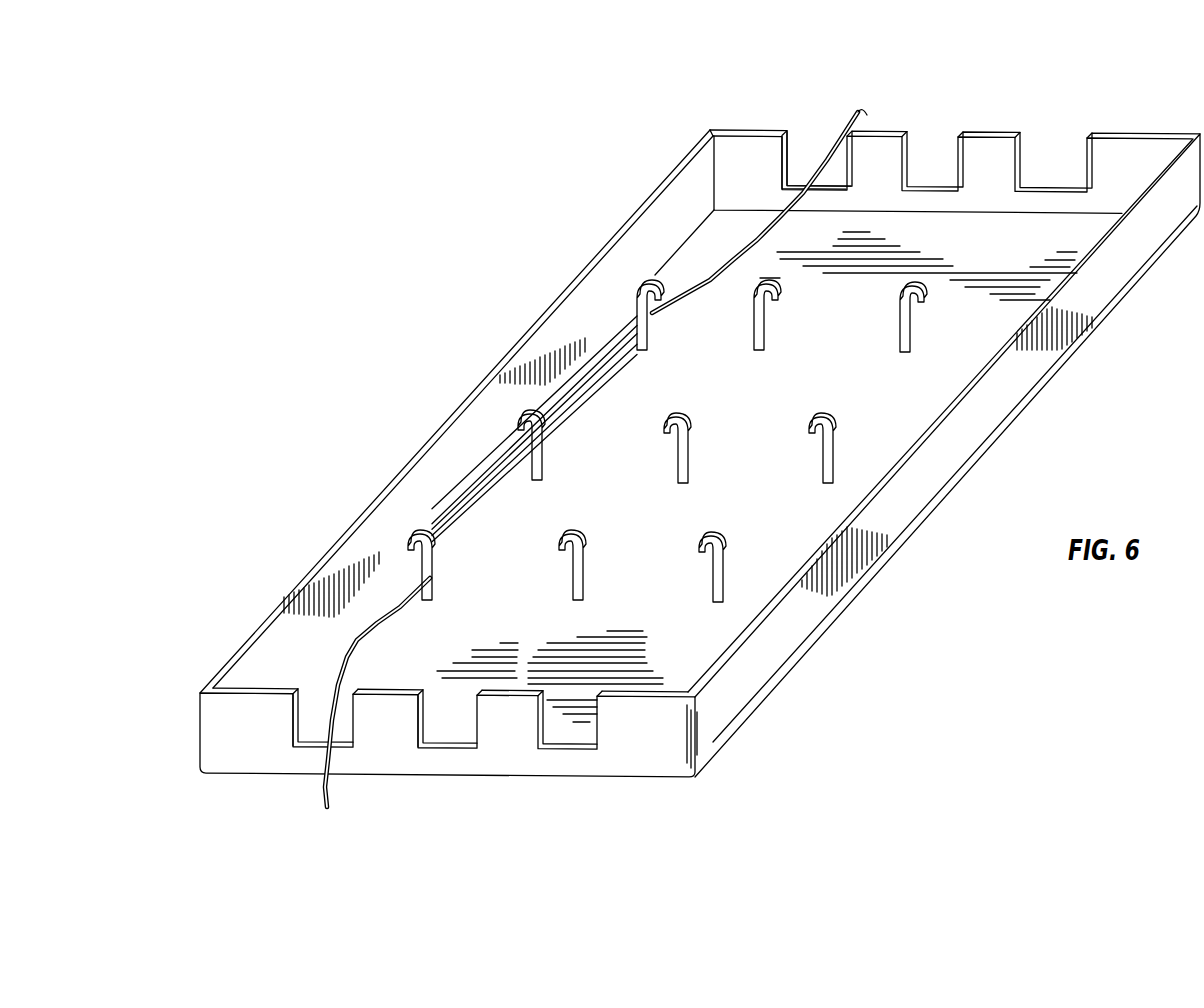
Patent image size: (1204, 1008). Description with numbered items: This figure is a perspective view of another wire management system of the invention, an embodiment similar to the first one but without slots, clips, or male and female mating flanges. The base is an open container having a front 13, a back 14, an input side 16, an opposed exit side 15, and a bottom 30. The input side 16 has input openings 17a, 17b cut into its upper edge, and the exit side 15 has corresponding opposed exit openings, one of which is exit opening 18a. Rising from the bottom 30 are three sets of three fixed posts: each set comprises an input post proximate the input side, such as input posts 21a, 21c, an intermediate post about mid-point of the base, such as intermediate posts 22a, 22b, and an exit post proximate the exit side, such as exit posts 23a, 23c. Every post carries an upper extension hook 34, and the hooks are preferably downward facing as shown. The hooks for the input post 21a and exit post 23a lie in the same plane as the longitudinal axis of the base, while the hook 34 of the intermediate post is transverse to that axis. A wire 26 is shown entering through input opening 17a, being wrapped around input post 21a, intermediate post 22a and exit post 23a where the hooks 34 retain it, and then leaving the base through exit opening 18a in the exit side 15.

The front 13 is at (889, 536).
The back 14 is at (374, 497).
The exit side 15 is at (1149, 133).
The input side 16 is at (645, 760).
The input opening 17a is at (310, 720).
The input opening 17b is at (458, 722).
The exit opening 18a is at (806, 150).
The input post 21a is at (414, 542).
The input post 21c is at (725, 568).
The intermediate post 22a is at (524, 420).
The intermediate post 22b is at (692, 420).
The exit post 23a is at (642, 290).
The exit post 23c is at (912, 314).
The wire 26 is at (345, 793).
The bottom 30 is at (1003, 265).
The upper extension hook 34 is at (775, 288).